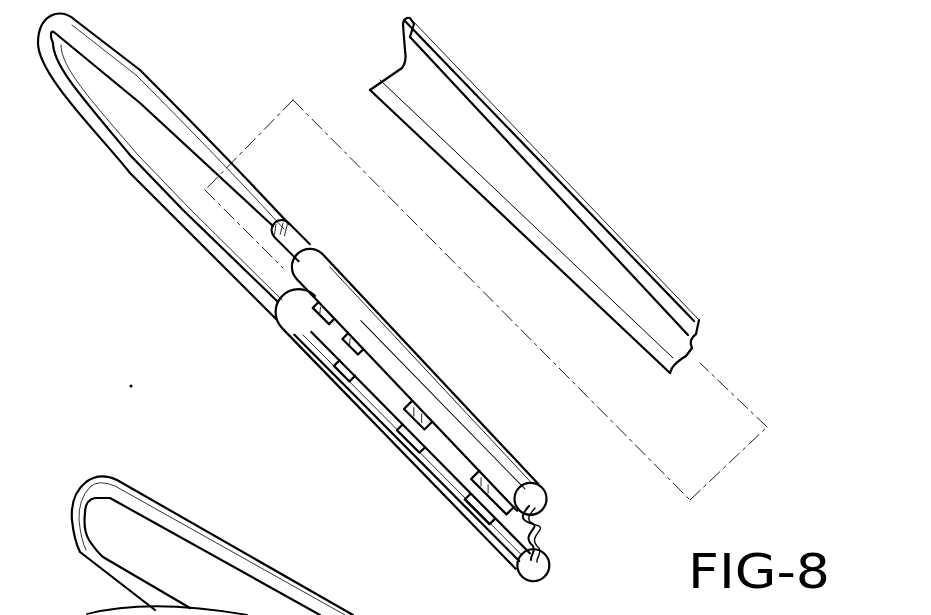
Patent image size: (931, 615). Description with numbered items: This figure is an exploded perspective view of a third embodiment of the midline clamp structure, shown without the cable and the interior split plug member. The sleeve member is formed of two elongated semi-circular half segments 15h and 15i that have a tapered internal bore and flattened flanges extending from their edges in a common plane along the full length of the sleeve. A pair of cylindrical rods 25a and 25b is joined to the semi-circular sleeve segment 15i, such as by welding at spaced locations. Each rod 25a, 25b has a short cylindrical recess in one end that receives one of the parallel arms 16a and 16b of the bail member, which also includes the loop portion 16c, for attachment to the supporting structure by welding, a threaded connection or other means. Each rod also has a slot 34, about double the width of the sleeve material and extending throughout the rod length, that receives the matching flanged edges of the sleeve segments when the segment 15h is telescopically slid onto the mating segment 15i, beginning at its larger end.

The parallel arm of the bail member 16a is at (146, 76).
The parallel arm of the bail member 16b is at (176, 222).
The lower wire loop 16c is at (84, 506).
The semi-circular sleeve segment 15h is at (402, 64).
The semi-circular sleeve segment 15i is at (310, 343).
The cylindrical rod 25a is at (433, 367).
The cylindrical rod 25b is at (440, 490).
The slot 34 is at (540, 487).